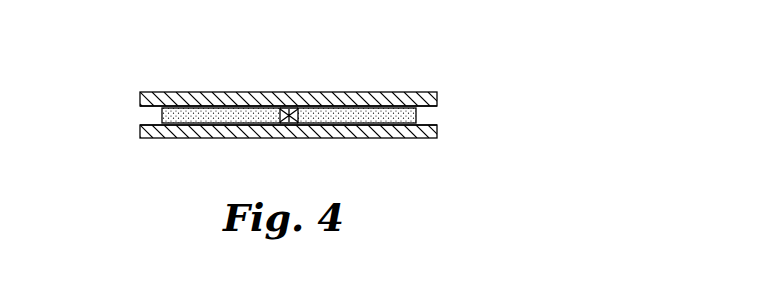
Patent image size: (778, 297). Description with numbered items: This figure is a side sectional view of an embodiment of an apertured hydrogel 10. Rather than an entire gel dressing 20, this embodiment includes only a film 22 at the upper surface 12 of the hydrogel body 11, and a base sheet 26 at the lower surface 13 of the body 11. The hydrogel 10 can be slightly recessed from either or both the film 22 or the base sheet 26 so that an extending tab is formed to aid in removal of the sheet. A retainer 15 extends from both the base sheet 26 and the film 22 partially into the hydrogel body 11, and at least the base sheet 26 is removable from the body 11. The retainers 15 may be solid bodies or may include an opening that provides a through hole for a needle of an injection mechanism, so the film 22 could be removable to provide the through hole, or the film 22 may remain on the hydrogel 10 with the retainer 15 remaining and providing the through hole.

The gel dressing 20 is at (426, 65).
The apertured hydrogel 10 is at (152, 114).
The body 11 is at (418, 115).
The upper surface 12 is at (374, 97).
The lower surface 13 is at (362, 136).
The retainer 15 is at (292, 108).
The film 22 is at (203, 97).
The base sheet 26 is at (174, 133).